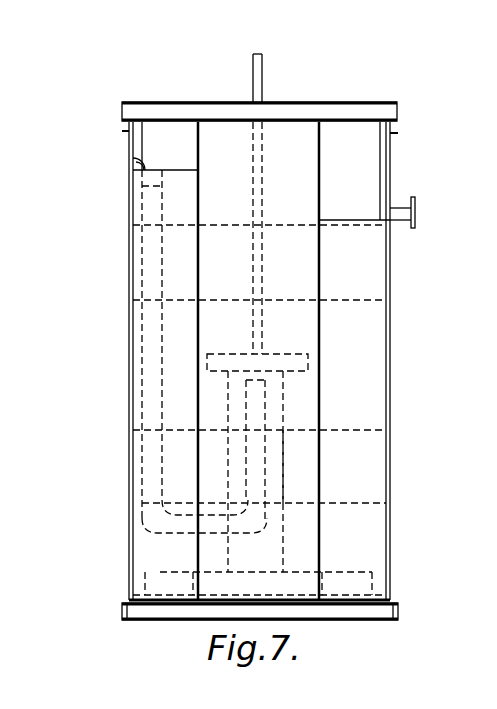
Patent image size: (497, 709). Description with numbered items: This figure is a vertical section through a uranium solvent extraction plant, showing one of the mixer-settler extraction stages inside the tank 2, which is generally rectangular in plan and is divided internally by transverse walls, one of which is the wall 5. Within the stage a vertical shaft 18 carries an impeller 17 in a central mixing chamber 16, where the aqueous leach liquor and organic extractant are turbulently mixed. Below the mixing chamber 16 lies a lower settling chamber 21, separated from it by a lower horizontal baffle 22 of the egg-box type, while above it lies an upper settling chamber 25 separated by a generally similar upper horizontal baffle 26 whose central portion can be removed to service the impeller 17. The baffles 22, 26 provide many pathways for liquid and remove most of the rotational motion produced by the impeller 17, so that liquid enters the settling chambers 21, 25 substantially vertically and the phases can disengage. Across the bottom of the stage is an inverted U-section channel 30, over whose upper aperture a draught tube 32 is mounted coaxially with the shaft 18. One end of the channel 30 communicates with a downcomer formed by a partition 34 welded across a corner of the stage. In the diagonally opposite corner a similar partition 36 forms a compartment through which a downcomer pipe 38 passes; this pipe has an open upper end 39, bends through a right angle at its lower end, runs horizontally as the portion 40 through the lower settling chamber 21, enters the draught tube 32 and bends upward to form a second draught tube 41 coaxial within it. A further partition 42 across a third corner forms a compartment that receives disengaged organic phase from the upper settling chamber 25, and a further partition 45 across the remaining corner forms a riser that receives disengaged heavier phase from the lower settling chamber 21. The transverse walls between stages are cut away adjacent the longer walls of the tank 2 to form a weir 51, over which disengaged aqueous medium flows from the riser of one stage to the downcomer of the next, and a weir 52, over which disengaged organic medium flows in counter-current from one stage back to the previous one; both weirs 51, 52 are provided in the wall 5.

The tank 2 is at (390, 406).
The transverse wall 5 is at (300, 122).
The mixing chamber 16 is at (302, 338).
The impeller 17 is at (306, 358).
The vertical shaft 18 is at (263, 73).
The lower settling chamber 21 is at (307, 551).
The lower horizontal baffle 22 is at (305, 452).
The upper settling chamber 25 is at (232, 183).
The upper horizontal baffle 26 is at (300, 283).
The inverted U-section channel 30 is at (163, 573).
The draught tube 32 is at (330, 493).
The partition 34 is at (319, 255).
The partition 36 is at (131, 148).
The downcomer pipe 38 is at (152, 316).
The open upper end 39 is at (145, 165).
The horizontal portion of downcomer pipe 40 is at (167, 535).
The second draught tube 41 is at (250, 440).
The further partition 42 is at (195, 245).
The further partition 45 is at (358, 160).
The weir 51 is at (145, 160).
The weir 52 is at (365, 220).